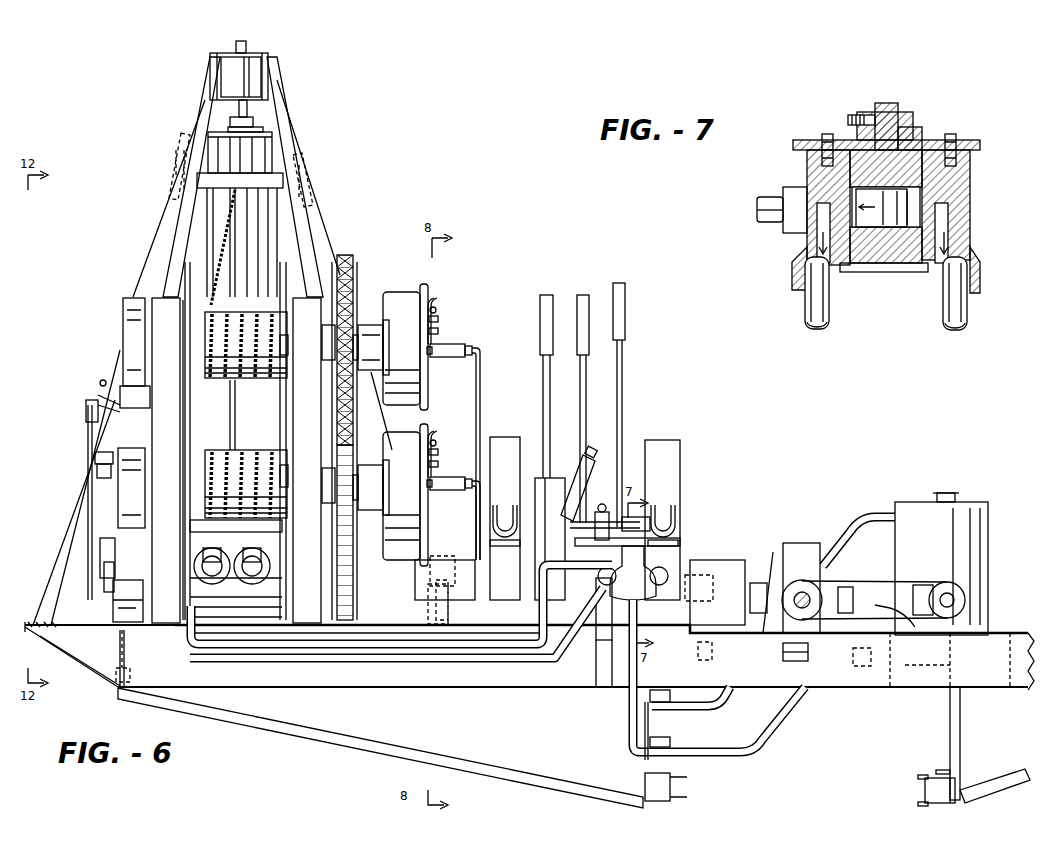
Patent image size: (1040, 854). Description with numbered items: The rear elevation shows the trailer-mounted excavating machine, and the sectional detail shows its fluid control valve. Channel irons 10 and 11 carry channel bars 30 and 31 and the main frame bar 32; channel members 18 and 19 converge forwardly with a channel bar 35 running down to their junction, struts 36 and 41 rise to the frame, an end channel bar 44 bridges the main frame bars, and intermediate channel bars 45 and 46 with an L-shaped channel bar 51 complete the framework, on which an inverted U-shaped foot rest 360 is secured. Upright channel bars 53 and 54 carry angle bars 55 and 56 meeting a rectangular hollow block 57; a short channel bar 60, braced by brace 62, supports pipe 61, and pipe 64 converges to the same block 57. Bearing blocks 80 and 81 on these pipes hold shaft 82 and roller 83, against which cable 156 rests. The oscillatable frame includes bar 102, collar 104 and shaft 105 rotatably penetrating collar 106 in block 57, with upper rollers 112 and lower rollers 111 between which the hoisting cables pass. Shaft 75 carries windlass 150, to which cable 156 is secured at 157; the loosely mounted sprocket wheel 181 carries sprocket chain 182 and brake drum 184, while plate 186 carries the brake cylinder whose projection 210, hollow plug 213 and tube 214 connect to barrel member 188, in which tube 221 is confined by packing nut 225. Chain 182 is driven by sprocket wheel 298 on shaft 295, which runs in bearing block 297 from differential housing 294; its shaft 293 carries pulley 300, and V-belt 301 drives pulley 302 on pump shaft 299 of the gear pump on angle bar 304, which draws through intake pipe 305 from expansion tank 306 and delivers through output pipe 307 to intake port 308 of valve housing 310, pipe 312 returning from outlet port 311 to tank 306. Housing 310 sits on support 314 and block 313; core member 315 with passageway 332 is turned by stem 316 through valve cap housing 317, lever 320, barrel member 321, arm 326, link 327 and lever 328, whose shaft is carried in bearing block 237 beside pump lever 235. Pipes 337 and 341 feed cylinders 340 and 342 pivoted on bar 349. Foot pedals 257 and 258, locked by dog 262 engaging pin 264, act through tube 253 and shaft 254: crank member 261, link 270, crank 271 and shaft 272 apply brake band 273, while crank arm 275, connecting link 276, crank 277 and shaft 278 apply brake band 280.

In FIG. 6, the shaft 105 is at (240, 40).
In FIG. 6, the rectangular hollow block 57 is at (263, 56).
In FIG. 6, the collar 106 is at (250, 74).
In FIG. 6, the collar 104 is at (253, 120).
In FIG. 6, the bar 102 is at (262, 129).
In FIG. 6, the upper rollers 112 is at (236, 156).
In FIG. 6, the pipe or roller 83 is at (220, 186).
In FIG. 6, the angle bar 56 is at (178, 234).
In FIG. 6, the angle bar 55 is at (300, 234).
In FIG. 6, the pipe 64 is at (324, 250).
In FIG. 6, the bearing block 80 is at (182, 170).
In FIG. 6, the bearing block 81 is at (306, 172).
In FIG. 6, the shaft 82 is at (308, 190).
In FIG. 6, the upright channel bar 54 is at (163, 300).
In FIG. 6, the upright channel bar 53 is at (318, 300).
In FIG. 6, the cable 156 is at (205, 330).
In FIG. 6, the windlass 150 is at (186, 381).
In FIG. 6, the cable attachment point 157 is at (290, 340).
In FIG. 6, the shaft 75 is at (322, 360).
In FIG. 6, the lower rollers 111 is at (260, 437).
In FIG. 6, the cylinder 342 is at (202, 556).
In FIG. 6, the cylinder 340 is at (260, 556).
In FIG. 6, the bar 349 is at (192, 562).
In FIG. 6, the sprocket chain 182 is at (355, 262).
In FIG. 6, the sprocket wheel 181 is at (358, 290).
In FIG. 6, the brake drum 184 is at (404, 296).
In FIG. 6, the circular plate member 186 is at (432, 294).
In FIG. 6, the projection 210 is at (436, 308).
In FIG. 6, the hollow plug 213 is at (438, 319).
In FIG. 6, the tube 214 is at (438, 331).
In FIG. 6, the barrel member 188 is at (444, 346).
In FIG. 6, the packing nut 225 is at (452, 358).
In FIG. 6, the tube 221 is at (482, 360).
In FIG. 6, the foot pedal 258 is at (512, 437).
In FIG. 6, the dog 262 is at (494, 512).
In FIG. 6, the pin 264 is at (503, 520).
In FIG. 6, the foot pedal 257 is at (662, 440).
In FIG. 6, the lever 235 is at (552, 288).
In FIG. 6, the lever 328 is at (626, 296).
In FIG. 6, the arm 326 is at (575, 538).
In FIG. 6, the link 327 is at (582, 478).
In FIG. 6, the barrel member 321 is at (610, 498).
In FIG. 6, the lever 320 is at (642, 524).
In FIG. 7, the lever 320 is at (914, 112).
In FIG. 6, the valve housing 310 is at (665, 582).
In FIG. 7, the valve housing 310 is at (970, 200).
In FIG. 6, the valve cap housing 317 is at (672, 568).
In FIG. 7, the valve cap housing 317 is at (975, 140).
In FIG. 6, the support 314 is at (600, 612).
In FIG. 6, the block 313 is at (596, 652).
In FIG. 6, the bearing block 237 is at (690, 598).
In FIG. 6, the main frame bar 32 is at (508, 680).
In FIG. 6, the pipe 337 is at (282, 642).
In FIG. 7, the pipe 337 is at (770, 196).
In FIG. 6, the pipe 341 is at (318, 655).
In FIG. 6, the shaft 254 is at (70, 623).
In FIG. 6, the brace 62 is at (96, 667).
In FIG. 6, the short channel bar 60 is at (30, 634).
In FIG. 6, the end channel bar 44 is at (116, 684).
In FIG. 6, the bearing block 297 is at (128, 636).
In FIG. 6, the strut 41 is at (528, 764).
In FIG. 6, the brake band 280 is at (127, 298).
In FIG. 6, the shaft 278 is at (100, 383).
In FIG. 6, the crank 277 is at (88, 400).
In FIG. 6, the connecting link 276 is at (88, 490).
In FIG. 6, the shaft 272 is at (95, 456).
In FIG. 6, the crank 271 is at (97, 471).
In FIG. 6, the brake band 273 is at (130, 448).
In FIG. 6, the crank arm 275 is at (80, 572).
In FIG. 6, the pipe 61 is at (48, 592).
In FIG. 6, the link 270 is at (116, 556).
In FIG. 6, the crank member 261 is at (115, 575).
In FIG. 6, the tube 253 is at (120, 610).
In FIG. 6, the channel bar 30 is at (640, 730).
In FIG. 6, the pipe 312 is at (712, 712).
In FIG. 7, the pipe 312 is at (807, 312).
In FIG. 6, the output pipe 307 is at (782, 718).
In FIG. 7, the output pipe 307 is at (966, 312).
In FIG. 6, the channel iron 10 is at (650, 770).
In FIG. 6, the channel member 19 is at (670, 768).
In FIG. 6, the channel bar 31 is at (950, 718).
In FIG. 6, the channel member 18 is at (926, 770).
In FIG. 6, the channel iron 11 is at (956, 766).
In FIG. 6, the strut 36 is at (1000, 788).
In FIG. 6, the foot rest 360 is at (705, 564).
In FIG. 6, the shaft 295 is at (752, 584).
In FIG. 6, the differential housing 294 is at (792, 548).
In FIG. 6, the shaft 293 is at (802, 592).
In FIG. 6, the pulley 300 is at (815, 588).
In FIG. 6, the V-belt 301 is at (868, 574).
In FIG. 6, the angle bar 304 is at (920, 585).
In FIG. 6, the pulley 302 is at (952, 590).
In FIG. 6, the pump shaft 299 is at (965, 600).
In FIG. 6, the expansion tank 306 is at (972, 505).
In FIG. 6, the intake pipe 305 is at (924, 660).
In FIG. 6, the channel bar 35 is at (783, 652).
In FIG. 6, the intermediate channel bar 45 is at (698, 660).
In FIG. 6, the channel bar 51 is at (855, 664).
In FIG. 6, the sprocket wheel 298 is at (376, 580).
In FIG. 6, the intermediate channel bar 46 is at (428, 656).
In FIG. 7, the stem 316 is at (888, 103).
In FIG. 7, the core member 315 is at (918, 134).
In FIG. 7, the passageway 332 is at (866, 232).
In FIG. 7, the outlet port 311 is at (818, 250).
In FIG. 7, the intake port 308 is at (965, 254).